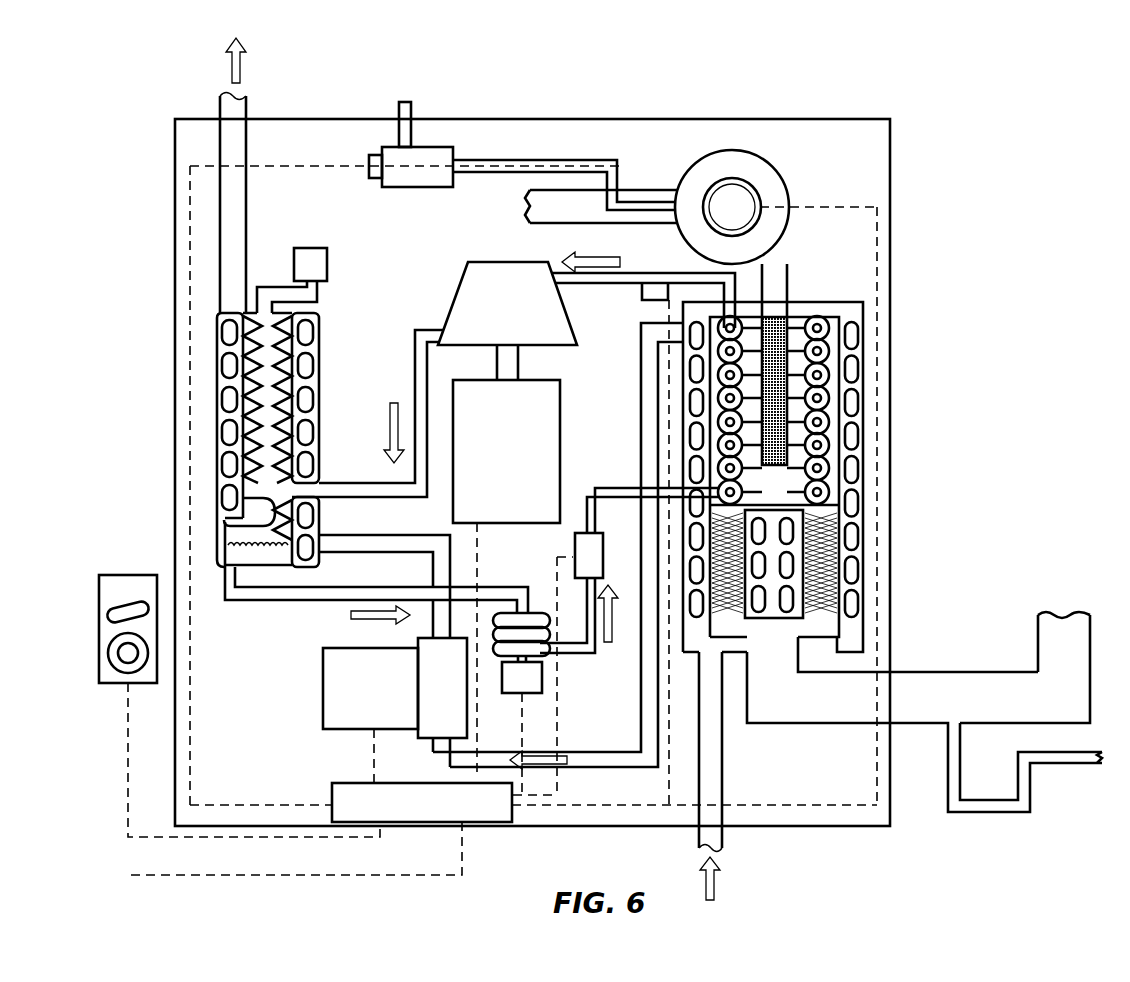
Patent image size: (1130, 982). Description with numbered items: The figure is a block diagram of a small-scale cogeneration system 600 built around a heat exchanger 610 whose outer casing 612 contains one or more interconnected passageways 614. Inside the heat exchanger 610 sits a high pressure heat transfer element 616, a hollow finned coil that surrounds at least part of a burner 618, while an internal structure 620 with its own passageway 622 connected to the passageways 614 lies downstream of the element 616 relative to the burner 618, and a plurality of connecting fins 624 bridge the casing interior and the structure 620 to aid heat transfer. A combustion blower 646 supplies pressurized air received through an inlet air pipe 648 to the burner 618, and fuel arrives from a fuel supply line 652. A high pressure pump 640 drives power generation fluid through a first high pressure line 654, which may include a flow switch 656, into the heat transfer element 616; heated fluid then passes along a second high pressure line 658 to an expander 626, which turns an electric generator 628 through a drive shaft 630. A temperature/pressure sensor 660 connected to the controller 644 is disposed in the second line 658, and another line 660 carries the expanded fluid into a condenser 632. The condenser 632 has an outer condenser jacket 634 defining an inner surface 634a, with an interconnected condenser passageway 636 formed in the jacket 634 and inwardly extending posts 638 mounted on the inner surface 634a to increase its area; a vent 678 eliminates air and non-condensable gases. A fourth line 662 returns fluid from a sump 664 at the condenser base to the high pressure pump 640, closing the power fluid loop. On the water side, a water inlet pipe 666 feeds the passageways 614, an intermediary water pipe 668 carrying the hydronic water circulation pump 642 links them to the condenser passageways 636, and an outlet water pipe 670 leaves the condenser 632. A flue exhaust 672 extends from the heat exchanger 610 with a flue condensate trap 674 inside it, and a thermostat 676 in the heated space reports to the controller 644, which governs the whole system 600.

The small-scale cogeneration system 600 is at (559, 78).
The heat exchanger 610 is at (834, 293).
The outer casing 612 is at (864, 446).
The interconnected passageways 614 is at (852, 500).
The high pressure heat transfer element 616 is at (838, 388).
The burner 618 is at (830, 352).
The internal structure 620 is at (773, 622).
The passageway 622 is at (795, 592).
The connecting fins 624 is at (838, 552).
The expander 626 is at (468, 263).
The electric generator 628 is at (562, 419).
The drive shaft 630 is at (521, 358).
The condenser 632 is at (210, 403).
The outer condenser jacket 634 is at (215, 342).
The inner surface 634a is at (226, 522).
The interconnected condenser passageway 636 is at (317, 314).
The inwardly extending posts 638 is at (245, 468).
The high pressure pump 640 is at (547, 610).
The hydronic water circulation pump 642 is at (322, 674).
The controller 644 is at (331, 798).
The combustion blower 646 is at (727, 150).
The inlet air pipe 648 is at (657, 190).
The fuel supply line 652 is at (413, 104).
The first high pressure line 654 is at (603, 490).
The flow switch 656 is at (604, 546).
The second high pressure line 658 is at (689, 273).
The temperature/pressure sensor 660 is at (357, 481).
The fourth line 662 is at (272, 603).
The sump 664 is at (242, 557).
The water inlet pipe 666 is at (726, 843).
The intermediary water pipe 668 is at (607, 751).
The outlet water pipe 670 is at (248, 104).
The flue exhaust 672 is at (783, 725).
The flue condensate trap 674 is at (993, 814).
The thermostat 676 is at (101, 575).
The vent 678 is at (328, 266).